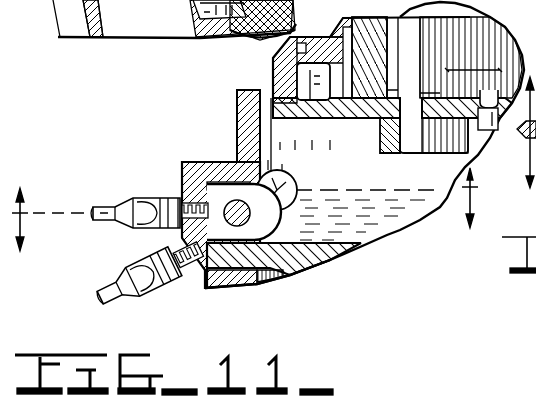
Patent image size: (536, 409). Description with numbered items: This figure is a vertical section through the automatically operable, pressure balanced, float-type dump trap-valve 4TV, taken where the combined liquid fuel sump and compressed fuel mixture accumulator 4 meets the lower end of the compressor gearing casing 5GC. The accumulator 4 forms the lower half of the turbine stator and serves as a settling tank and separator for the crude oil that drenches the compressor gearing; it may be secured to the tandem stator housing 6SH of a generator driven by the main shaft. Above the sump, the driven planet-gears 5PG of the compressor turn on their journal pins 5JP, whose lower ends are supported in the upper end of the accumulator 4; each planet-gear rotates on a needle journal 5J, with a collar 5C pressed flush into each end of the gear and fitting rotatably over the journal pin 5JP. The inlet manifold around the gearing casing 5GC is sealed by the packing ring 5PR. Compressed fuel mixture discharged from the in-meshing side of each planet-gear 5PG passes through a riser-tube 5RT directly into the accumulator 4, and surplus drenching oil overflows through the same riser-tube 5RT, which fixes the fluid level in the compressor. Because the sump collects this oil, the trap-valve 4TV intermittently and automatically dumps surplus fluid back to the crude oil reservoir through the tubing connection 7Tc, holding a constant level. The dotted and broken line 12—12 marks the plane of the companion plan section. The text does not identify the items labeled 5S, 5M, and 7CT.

The combined liquid fuel sump and compressed fuel mixture accumulator 4 is at (246, 122).
The dump trap-valve 4TV is at (233, 208).
The needle journal 5J is at (466, 24).
The planet-gears 5PG is at (473, 30).
The spring 5S is at (527, 63).
The packing ring 5PR is at (296, 47).
The magnet 5M is at (272, 70).
The gearing casing 5GC is at (296, 77).
The collar 5C is at (378, 119).
The journal pins 5JP is at (414, 148).
The riser-tube 5RT is at (491, 131).
The tandem stator housing 6SH is at (218, 289).
The tubing connection 7Tc is at (104, 206).
The cable tube 7CT is at (110, 287).
The section line 12— 12 is at (256, 209).